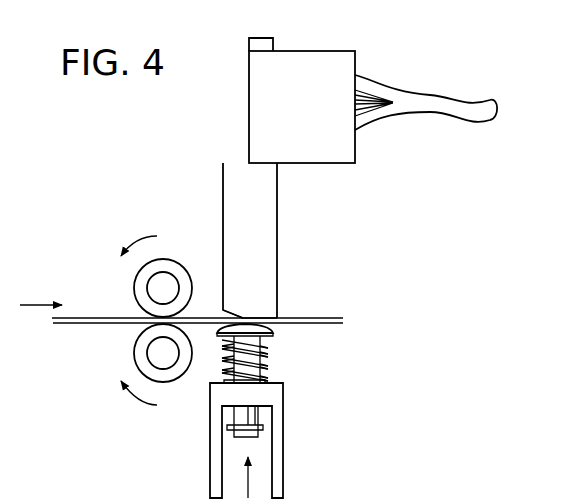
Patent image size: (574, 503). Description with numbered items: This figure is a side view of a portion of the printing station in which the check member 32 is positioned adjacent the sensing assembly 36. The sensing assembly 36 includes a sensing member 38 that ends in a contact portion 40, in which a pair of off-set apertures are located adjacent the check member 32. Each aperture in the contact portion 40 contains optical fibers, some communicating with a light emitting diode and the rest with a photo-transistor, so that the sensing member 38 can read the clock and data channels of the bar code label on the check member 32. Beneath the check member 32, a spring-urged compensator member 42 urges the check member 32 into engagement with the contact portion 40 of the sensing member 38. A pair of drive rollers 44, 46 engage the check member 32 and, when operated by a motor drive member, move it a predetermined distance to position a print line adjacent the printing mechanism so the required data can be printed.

The check member 32 is at (82, 324).
The sensing assembly 36 is at (205, 183).
The sensing member 38 is at (274, 226).
The contact portion 40 is at (245, 317).
The spring-urged compensator member 42 is at (262, 331).
The drive roller 44 is at (181, 261).
The drive roller 46 is at (172, 382).